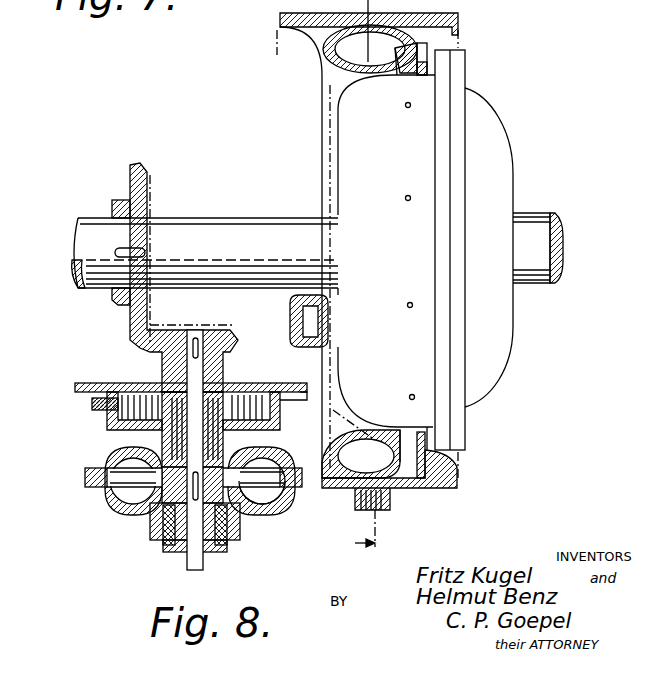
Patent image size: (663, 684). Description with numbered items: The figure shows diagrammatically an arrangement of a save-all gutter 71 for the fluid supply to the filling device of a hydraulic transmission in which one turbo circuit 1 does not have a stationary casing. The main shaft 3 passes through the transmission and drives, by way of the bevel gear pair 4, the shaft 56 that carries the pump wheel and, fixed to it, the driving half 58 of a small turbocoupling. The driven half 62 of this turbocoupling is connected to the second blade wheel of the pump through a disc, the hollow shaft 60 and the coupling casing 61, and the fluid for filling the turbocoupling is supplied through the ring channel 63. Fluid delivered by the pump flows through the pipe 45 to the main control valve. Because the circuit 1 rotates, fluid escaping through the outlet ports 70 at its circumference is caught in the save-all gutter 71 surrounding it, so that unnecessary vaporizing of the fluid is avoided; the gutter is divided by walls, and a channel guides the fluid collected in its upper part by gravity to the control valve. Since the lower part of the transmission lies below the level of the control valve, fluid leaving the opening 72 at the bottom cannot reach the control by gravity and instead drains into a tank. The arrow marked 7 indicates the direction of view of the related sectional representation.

The circuit 1 is at (422, 250).
The main shaft 3 is at (228, 217).
The bevel gear pair 4 is at (176, 340).
The section line 7 is at (353, 529).
The pipe 45 is at (291, 313).
The shaft 56 is at (190, 562).
The driving half of turbocoupling 58 is at (263, 490).
The hollow shaft 60 is at (213, 545).
The coupling casing 61 is at (120, 510).
The driven half of turbocoupling 62 is at (264, 482).
The ring channel 63 is at (242, 405).
The outlet ports 70 is at (405, 106).
The save-all gutter 71 is at (370, 49).
The opening 72 is at (393, 503).